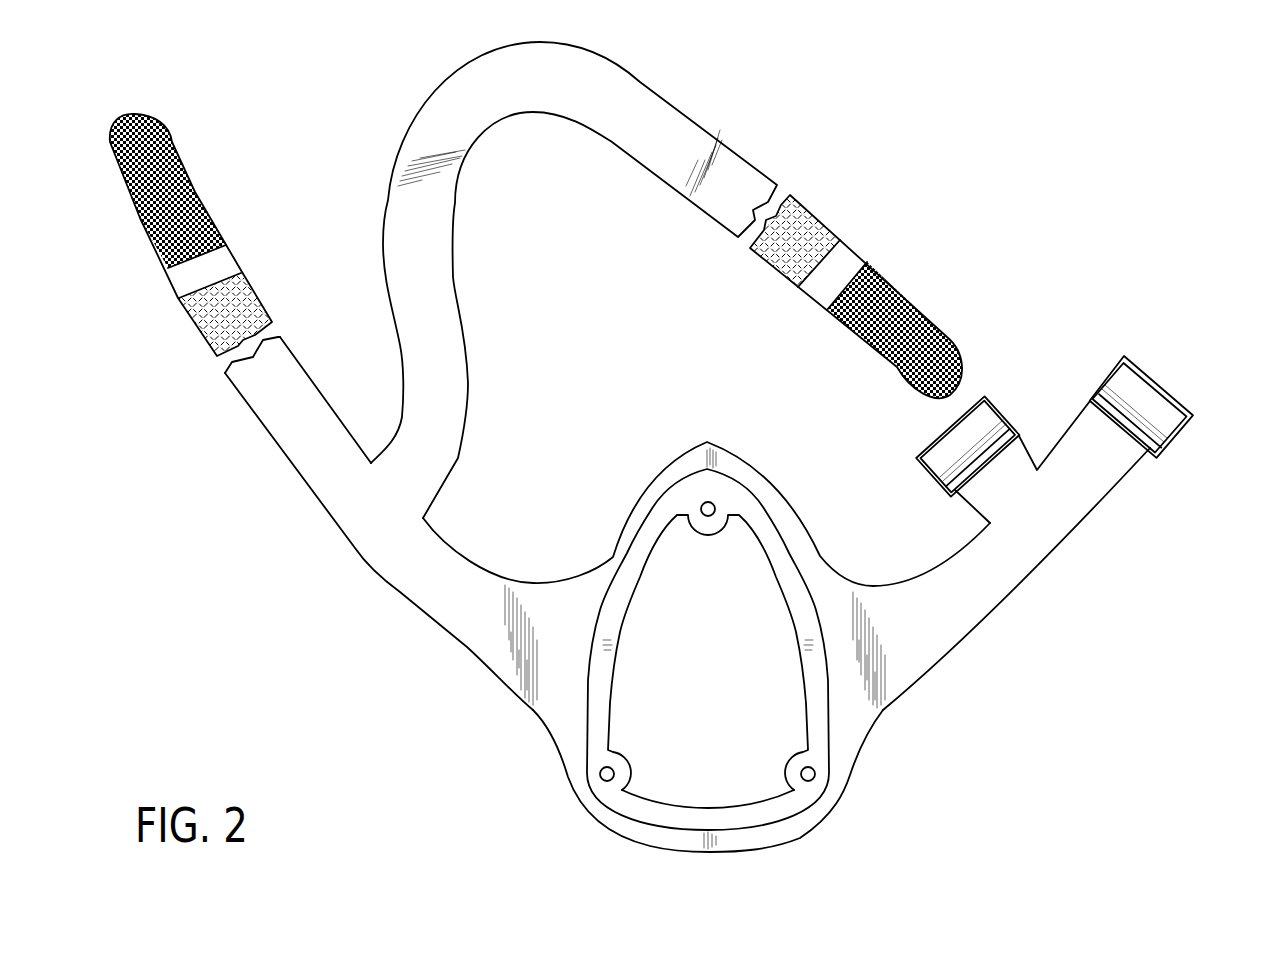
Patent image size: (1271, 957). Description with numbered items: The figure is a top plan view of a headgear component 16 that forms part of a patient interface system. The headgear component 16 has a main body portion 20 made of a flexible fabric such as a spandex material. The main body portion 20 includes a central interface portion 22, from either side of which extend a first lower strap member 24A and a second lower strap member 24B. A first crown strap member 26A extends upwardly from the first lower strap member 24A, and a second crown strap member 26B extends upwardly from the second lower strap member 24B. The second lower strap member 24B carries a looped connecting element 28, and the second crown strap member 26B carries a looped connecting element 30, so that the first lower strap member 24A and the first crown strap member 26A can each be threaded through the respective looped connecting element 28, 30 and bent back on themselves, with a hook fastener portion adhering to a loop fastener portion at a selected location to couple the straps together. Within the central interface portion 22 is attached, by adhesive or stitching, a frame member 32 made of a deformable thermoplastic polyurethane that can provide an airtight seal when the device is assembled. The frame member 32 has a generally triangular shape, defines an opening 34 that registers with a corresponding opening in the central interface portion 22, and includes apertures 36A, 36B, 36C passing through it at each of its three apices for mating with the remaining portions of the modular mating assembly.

The headgear component 16 is at (983, 217).
The main body portion 20 is at (547, 683).
The central interface portion 22 is at (740, 462).
The first lower strap member 24A is at (447, 592).
The second lower strap member 24B is at (955, 610).
The first crown strap member 26A is at (607, 75).
The second crown strap member 26B is at (1022, 458).
The looped connecting element 28 is at (1160, 383).
The looped connecting element 30 is at (943, 432).
The frame member 32 is at (778, 548).
The opening 34 is at (727, 672).
The aperture 36A is at (701, 505).
The aperture 36B is at (816, 774).
The aperture 36C is at (600, 774).